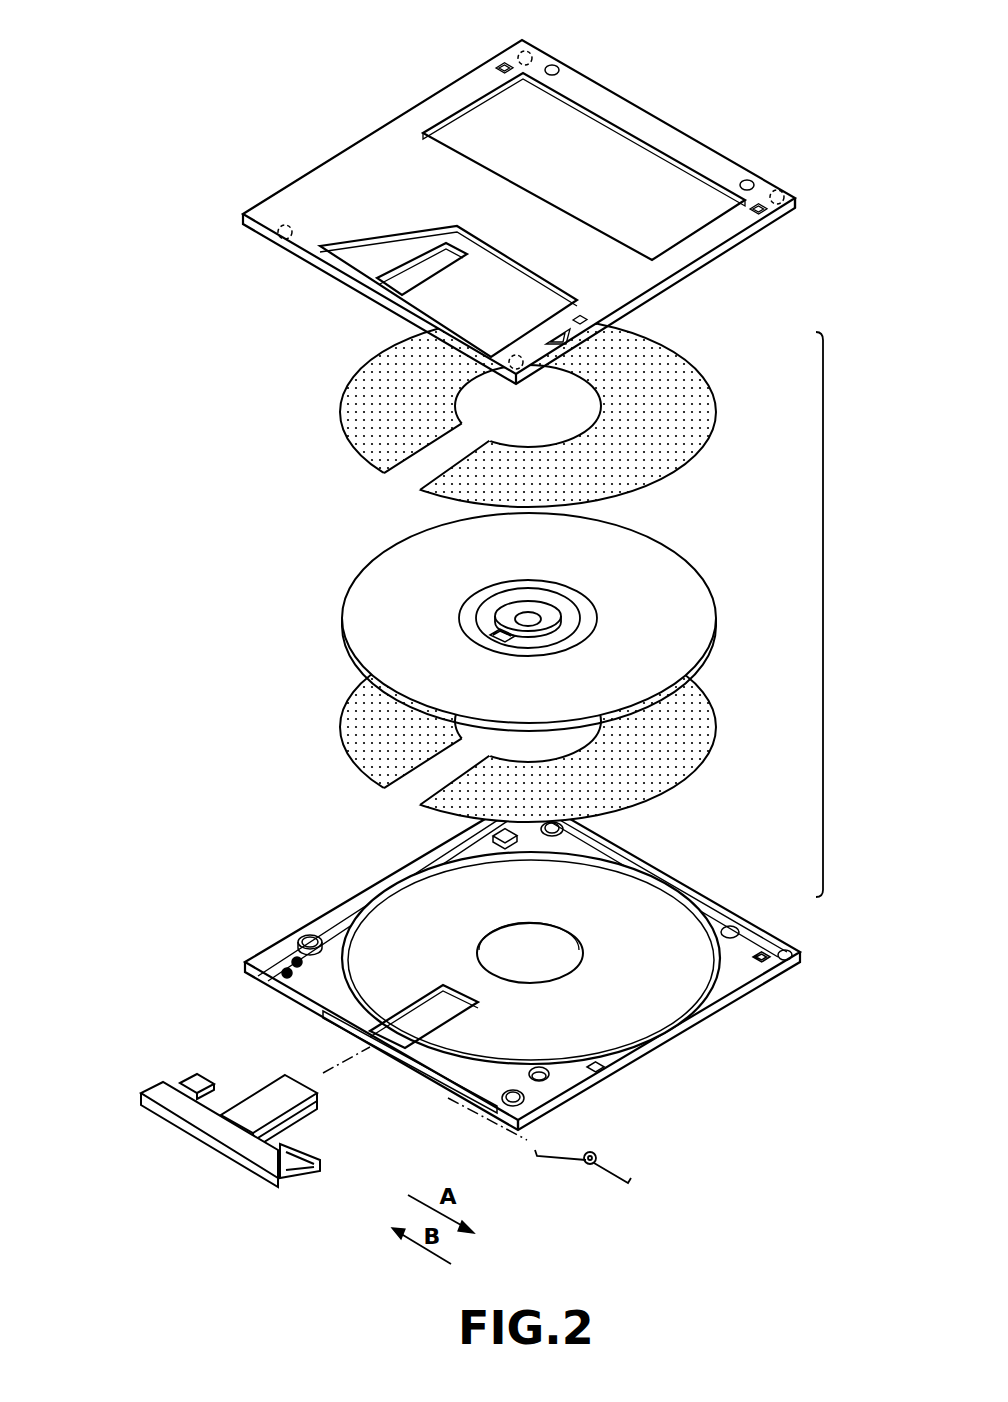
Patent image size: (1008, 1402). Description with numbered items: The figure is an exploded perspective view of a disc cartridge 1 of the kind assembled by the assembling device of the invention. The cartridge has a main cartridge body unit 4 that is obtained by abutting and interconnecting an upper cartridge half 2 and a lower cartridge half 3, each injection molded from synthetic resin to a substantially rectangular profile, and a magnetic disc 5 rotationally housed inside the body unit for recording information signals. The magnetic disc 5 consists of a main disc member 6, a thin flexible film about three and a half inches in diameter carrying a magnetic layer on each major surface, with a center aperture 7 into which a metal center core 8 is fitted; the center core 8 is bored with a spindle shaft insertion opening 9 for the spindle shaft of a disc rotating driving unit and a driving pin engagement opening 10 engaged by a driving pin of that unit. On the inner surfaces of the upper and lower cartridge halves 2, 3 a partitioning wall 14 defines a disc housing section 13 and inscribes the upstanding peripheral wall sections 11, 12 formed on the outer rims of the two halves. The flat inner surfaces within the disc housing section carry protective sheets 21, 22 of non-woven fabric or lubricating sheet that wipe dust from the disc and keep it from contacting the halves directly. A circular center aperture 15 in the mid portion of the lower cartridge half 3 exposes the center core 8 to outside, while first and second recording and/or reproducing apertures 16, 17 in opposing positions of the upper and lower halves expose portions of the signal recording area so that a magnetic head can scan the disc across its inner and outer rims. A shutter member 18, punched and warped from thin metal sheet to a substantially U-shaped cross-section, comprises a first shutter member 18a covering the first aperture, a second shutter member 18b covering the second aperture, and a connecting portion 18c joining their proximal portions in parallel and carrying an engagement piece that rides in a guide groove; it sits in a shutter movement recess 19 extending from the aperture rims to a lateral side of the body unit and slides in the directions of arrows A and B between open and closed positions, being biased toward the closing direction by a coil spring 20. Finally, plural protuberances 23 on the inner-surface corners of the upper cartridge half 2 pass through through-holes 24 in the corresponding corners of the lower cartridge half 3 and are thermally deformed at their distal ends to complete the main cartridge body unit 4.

The disc cartridge 1 is at (323, 140).
The upper cartridge half 2 is at (712, 250).
The lower cartridge half 3 is at (750, 942).
The main cartridge body unit 4 is at (833, 605).
The magnetic disc 5 is at (519, 622).
The main disc member 6 is at (343, 615).
The center aperture 7 is at (545, 598).
The center core 8 is at (488, 592).
The spindle shaft insertion opening 9 is at (533, 625).
The driving pin engagement opening 10 is at (493, 641).
The peripheral wall section 11 is at (754, 240).
The peripheral wall section 12 is at (717, 1000).
The disc housing section 13 is at (640, 895).
The partitioning wall 14 is at (467, 866).
The center aperture 15 is at (582, 962).
The first recording and/or reproducing aperture 16 is at (432, 270).
The second recording and/or reproducing aperture 17 is at (427, 1017).
The shutter member 18 is at (245, 1125).
The first shutter member 18a is at (260, 1097).
The second shutter member 18b is at (300, 1120).
The connecting portion 18c is at (163, 1125).
The shutter movement recess 19 is at (520, 284).
The coil spring 20 is at (590, 1168).
The protective sheet 21 is at (698, 432).
The protective sheet 22 is at (345, 718).
The protuberances 23 is at (527, 56).
The through-holes 24 is at (587, 838).